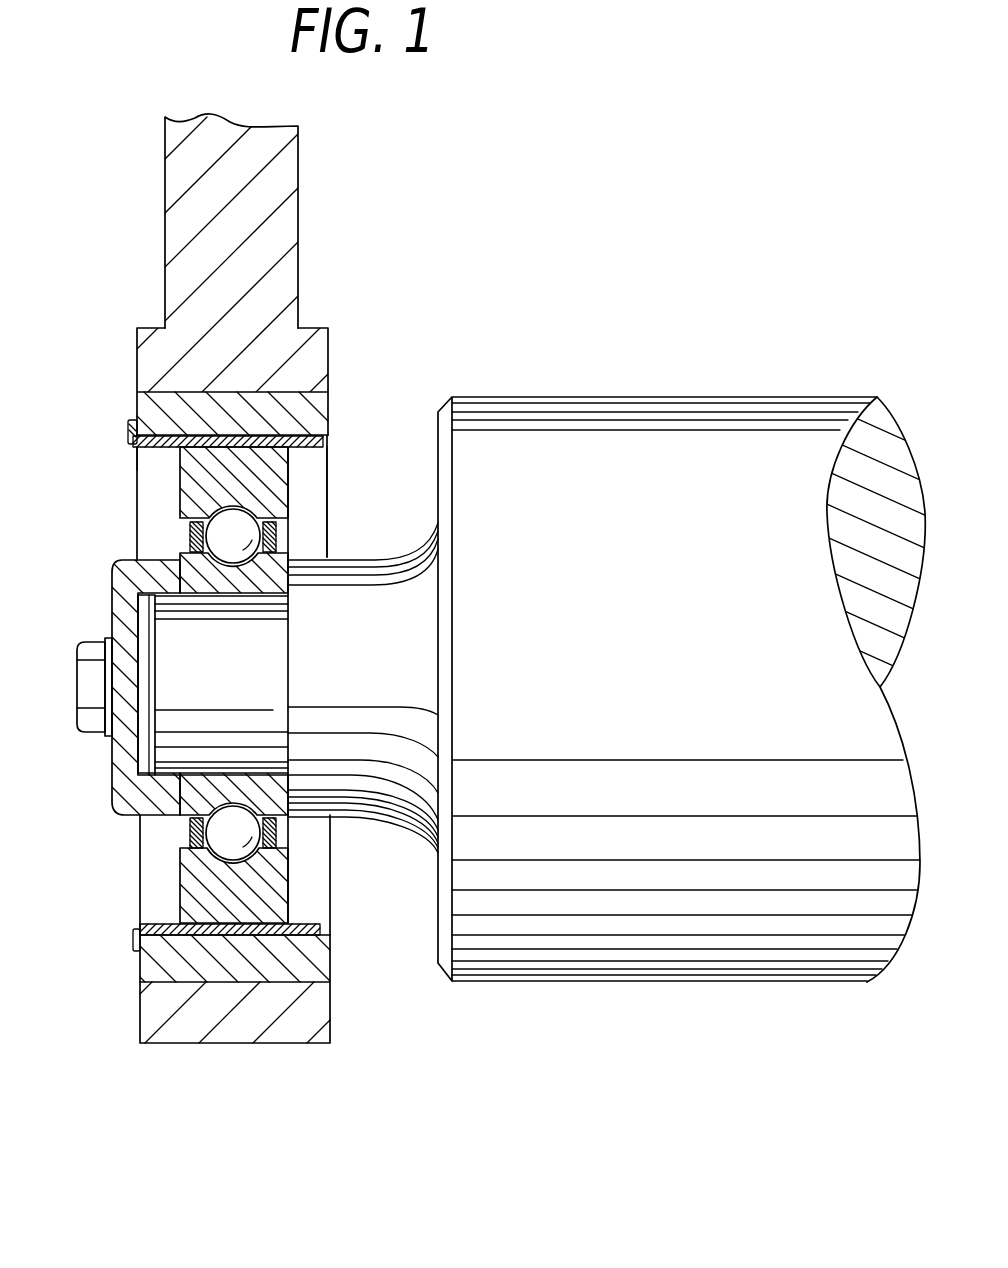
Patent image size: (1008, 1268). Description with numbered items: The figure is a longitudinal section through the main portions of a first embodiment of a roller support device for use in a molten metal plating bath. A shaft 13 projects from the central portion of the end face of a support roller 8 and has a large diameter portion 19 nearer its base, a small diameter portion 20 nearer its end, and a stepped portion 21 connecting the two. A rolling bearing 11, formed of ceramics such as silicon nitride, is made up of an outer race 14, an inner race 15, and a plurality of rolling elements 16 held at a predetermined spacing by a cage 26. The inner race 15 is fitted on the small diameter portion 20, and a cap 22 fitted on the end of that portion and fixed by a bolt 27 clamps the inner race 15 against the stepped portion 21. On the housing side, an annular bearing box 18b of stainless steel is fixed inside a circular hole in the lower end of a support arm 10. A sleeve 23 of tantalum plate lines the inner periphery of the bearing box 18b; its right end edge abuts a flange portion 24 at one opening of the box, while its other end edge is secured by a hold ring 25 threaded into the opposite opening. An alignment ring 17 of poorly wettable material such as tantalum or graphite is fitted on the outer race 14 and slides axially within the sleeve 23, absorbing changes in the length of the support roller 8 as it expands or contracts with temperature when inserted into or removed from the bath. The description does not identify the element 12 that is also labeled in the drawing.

The support roller 8 is at (615, 940).
The support arm 10 is at (284, 165).
The rolling bearing 11 is at (231, 517).
The flange 12 is at (318, 388).
The shaft 13 is at (172, 640).
The outer race 14 is at (200, 877).
The inner race 15 is at (188, 795).
The rolling elements 16 is at (178, 497).
The alignment ring 17 is at (200, 912).
The bearing box 18b is at (288, 396).
The large diameter portion 19 is at (383, 607).
The small diameter portion 20 is at (260, 740).
The stepped portion 21 is at (294, 548).
The cap 22 is at (128, 758).
The sleeve 23 is at (140, 453).
The flange portion 24 is at (328, 425).
The hold ring 25 is at (130, 428).
The cage 26 is at (282, 845).
The bolt 27 is at (97, 717).